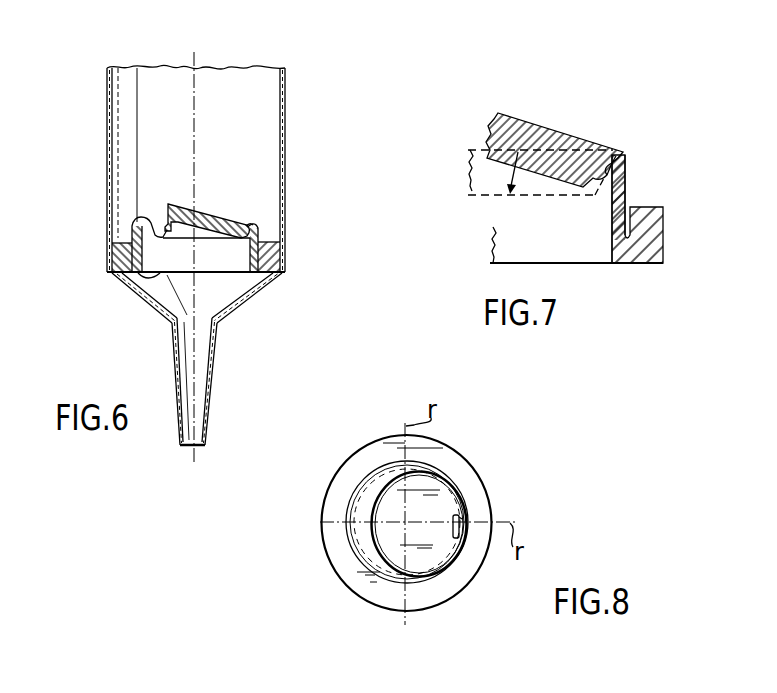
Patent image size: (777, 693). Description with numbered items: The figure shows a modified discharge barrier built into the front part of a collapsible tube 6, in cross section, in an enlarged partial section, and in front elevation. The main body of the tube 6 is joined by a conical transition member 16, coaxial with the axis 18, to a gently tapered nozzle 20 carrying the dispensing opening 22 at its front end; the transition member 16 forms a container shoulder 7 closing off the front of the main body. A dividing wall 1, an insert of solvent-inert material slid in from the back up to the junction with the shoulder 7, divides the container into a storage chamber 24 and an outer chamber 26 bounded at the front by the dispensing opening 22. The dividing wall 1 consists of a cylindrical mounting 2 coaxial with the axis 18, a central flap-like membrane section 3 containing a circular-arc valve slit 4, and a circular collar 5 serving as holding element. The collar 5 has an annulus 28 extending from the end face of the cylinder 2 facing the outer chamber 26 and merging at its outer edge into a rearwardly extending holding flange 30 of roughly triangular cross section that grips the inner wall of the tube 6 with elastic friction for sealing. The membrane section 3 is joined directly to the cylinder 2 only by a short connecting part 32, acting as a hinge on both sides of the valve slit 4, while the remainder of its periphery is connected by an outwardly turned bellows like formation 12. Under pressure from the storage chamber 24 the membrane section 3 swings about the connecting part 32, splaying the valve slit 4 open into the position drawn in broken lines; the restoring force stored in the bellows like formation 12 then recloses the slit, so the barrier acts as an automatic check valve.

In FIG. 6, the dividing wall 1 is at (288, 267).
In FIG. 7, the dividing wall 1 is at (657, 272).
In FIG. 8, the dividing wall 1 is at (470, 483).
In FIG. 6, the mounting 2 is at (137, 218).
In FIG. 7, the mounting 2 is at (627, 188).
In FIG. 8, the mounting 2 is at (350, 530).
In FIG. 6, the membrane section 3 is at (228, 215).
In FIG. 7, the membrane section 3 is at (527, 133).
In FIG. 8, the membrane section 3 is at (430, 485).
In FIG. 6, the valve slit 4 is at (253, 223).
In FIG. 7, the valve slit 4 is at (612, 155).
In FIG. 8, the valve slit 4 is at (462, 535).
In FIG. 6, the circular collar 5 is at (110, 274).
In FIG. 7, the circular collar 5 is at (663, 250).
In FIG. 6, the tube 6 is at (285, 92).
In FIG. 6, the container shoulder 7 is at (160, 314).
In FIG. 6, the bellows like formation 12 is at (150, 283).
In FIG. 8, the bellows like formation 12 is at (375, 560).
In FIG. 6, the conical transition member 16 is at (256, 307).
In FIG. 6, the axis 18 is at (197, 90).
In FIG. 6, the nozzle 20 is at (212, 402).
In FIG. 6, the dispensing opening 22 is at (190, 450).
In FIG. 6, the storage chamber 24 is at (234, 141).
In FIG. 6, the outer chamber 26 is at (213, 282).
In FIG. 6, the annulus 28 is at (267, 285).
In FIG. 7, the annulus 28 is at (622, 263).
In FIG. 6, the holding flange 30 is at (110, 257).
In FIG. 7, the holding flange 30 is at (663, 227).
In FIG. 7, the connecting part 32 is at (623, 150).
In FIG. 8, the connecting part 32 is at (465, 517).